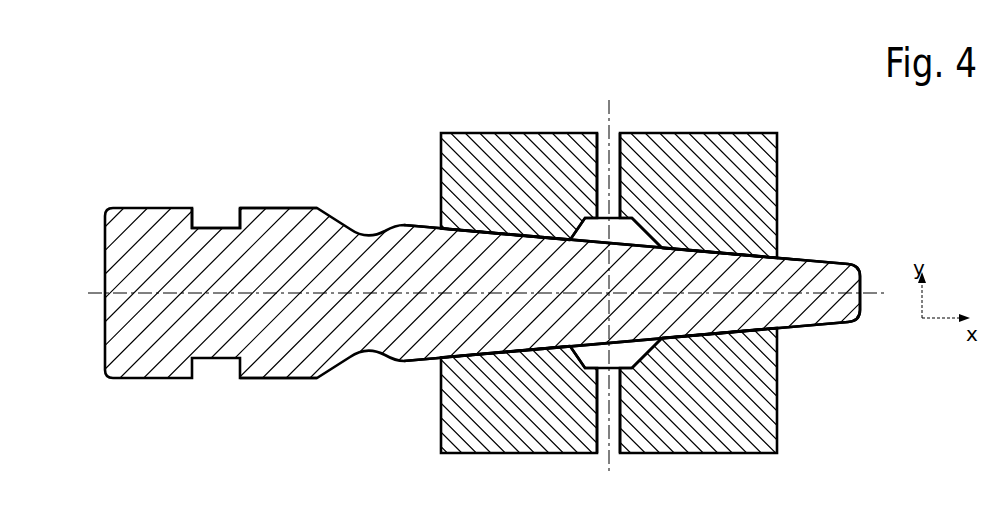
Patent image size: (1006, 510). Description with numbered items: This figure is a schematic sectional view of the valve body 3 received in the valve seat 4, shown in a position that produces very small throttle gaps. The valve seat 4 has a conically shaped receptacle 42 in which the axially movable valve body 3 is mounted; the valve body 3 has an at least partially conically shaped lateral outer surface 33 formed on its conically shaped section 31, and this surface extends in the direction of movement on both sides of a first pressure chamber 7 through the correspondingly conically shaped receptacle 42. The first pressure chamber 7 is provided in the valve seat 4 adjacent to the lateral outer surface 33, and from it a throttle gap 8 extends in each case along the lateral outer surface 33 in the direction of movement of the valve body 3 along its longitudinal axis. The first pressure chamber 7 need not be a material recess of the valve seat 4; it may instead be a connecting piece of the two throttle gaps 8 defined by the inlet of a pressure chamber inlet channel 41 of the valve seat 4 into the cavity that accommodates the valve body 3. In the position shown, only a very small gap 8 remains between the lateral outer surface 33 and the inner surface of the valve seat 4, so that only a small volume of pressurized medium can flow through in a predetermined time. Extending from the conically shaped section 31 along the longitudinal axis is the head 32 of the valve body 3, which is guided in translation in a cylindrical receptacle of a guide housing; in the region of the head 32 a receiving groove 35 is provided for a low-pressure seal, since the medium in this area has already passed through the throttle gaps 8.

The valve body 3 is at (120, 407).
The valve seat 4 is at (792, 448).
The first pressure chamber 7 is at (640, 240).
The throttle gap 8 is at (497, 233).
The conically shaped section 31 is at (810, 270).
The head 32 is at (268, 227).
The lateral outer surface 33 is at (797, 258).
The receiving groove 35 is at (215, 213).
The pressure chamber inlet channel 41 is at (600, 200).
The conically shaped receptacle 42 is at (490, 351).